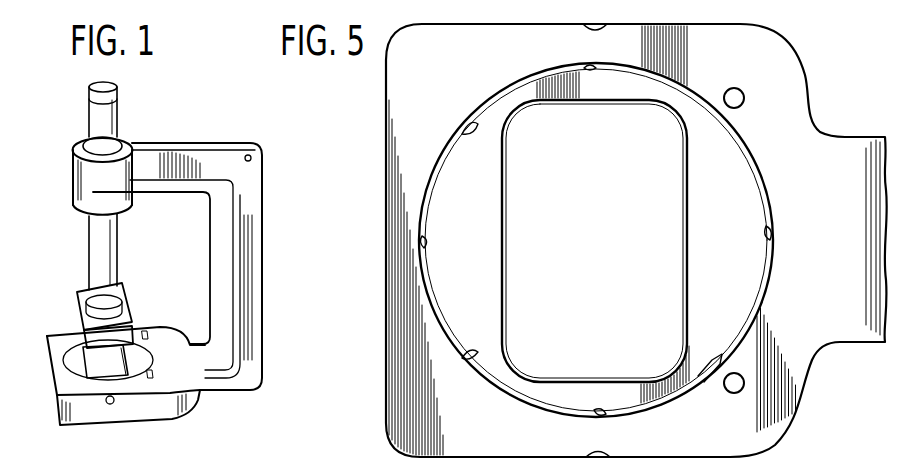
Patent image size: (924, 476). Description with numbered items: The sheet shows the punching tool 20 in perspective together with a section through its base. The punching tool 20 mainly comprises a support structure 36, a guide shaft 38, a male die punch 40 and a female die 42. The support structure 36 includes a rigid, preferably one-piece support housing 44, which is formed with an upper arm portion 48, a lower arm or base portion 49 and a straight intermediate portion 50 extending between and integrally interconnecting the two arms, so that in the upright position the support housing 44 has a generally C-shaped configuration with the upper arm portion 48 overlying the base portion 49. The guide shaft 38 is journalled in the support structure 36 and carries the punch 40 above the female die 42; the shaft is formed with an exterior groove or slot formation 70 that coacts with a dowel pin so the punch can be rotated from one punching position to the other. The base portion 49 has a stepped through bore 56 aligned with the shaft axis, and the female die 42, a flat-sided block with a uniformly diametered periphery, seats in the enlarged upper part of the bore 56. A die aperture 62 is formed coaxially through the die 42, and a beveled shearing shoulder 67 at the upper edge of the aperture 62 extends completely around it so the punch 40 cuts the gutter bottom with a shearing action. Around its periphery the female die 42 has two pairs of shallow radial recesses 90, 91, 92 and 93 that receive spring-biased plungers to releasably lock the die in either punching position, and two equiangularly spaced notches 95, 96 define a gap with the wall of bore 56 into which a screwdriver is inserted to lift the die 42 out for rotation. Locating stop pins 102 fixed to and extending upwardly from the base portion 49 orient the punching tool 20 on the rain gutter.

In FIG. 1, the punching tool 20 is at (62, 146).
In FIG. 1, the support structure 36 is at (240, 138).
In FIG. 1, the guide shaft 38 is at (118, 105).
In FIG. 1, the male die punch 40 is at (130, 310).
In FIG. 1, the female die 42 is at (62, 385).
In FIG. 5, the female die 42 is at (740, 221).
In FIG. 1, the support housing 44 is at (262, 228).
In FIG. 1, the upper arm portion 48 is at (180, 143).
In FIG. 1, the lower arm or base portion 49 is at (170, 415).
In FIG. 1, the intermediate portion 50 is at (266, 340).
In FIG. 5, the through bore 56 is at (470, 356).
In FIG. 1, the die aperture 62 is at (112, 372).
In FIG. 5, the die aperture 62 is at (505, 315).
In FIG. 5, the workpiece shearing shoulder 67 is at (505, 250).
In FIG. 1, the groove or slot formation 70 is at (106, 132).
In FIG. 5, the shallow bore or recess 90 is at (590, 70).
In FIG. 5, the shallow bore or recess 91 is at (598, 410).
In FIG. 5, the shallow bore or recess 92 is at (766, 234).
In FIG. 5, the shallow bore or recess 93 is at (426, 244).
In FIG. 5, the notch 95 is at (470, 126).
In FIG. 5, the notch 96 is at (712, 374).
In FIG. 5, the locating stop pins 102 is at (744, 106).